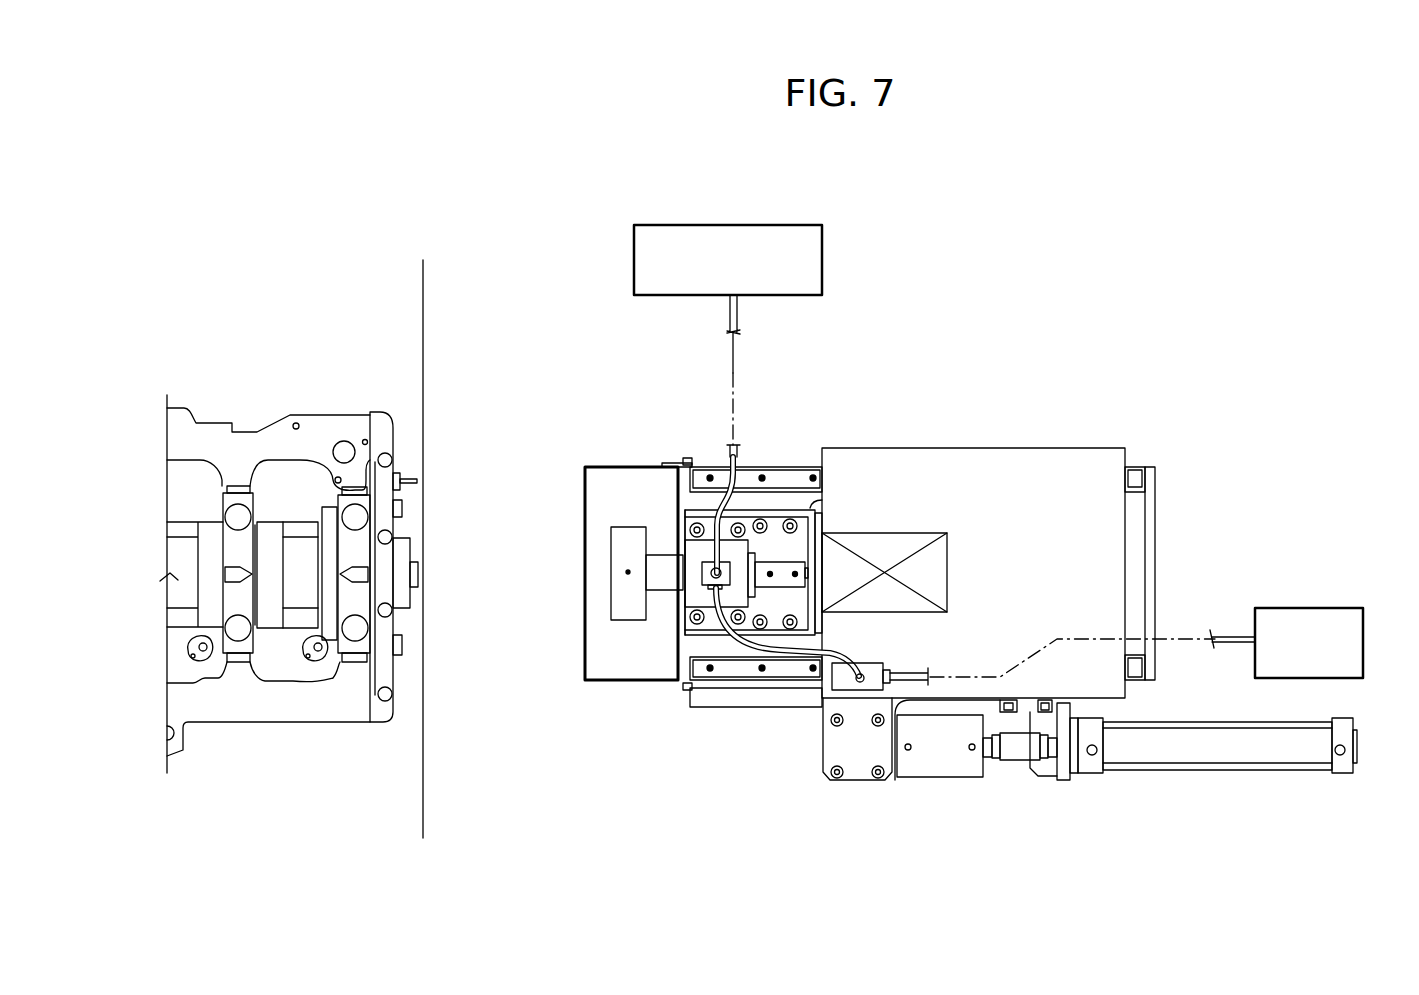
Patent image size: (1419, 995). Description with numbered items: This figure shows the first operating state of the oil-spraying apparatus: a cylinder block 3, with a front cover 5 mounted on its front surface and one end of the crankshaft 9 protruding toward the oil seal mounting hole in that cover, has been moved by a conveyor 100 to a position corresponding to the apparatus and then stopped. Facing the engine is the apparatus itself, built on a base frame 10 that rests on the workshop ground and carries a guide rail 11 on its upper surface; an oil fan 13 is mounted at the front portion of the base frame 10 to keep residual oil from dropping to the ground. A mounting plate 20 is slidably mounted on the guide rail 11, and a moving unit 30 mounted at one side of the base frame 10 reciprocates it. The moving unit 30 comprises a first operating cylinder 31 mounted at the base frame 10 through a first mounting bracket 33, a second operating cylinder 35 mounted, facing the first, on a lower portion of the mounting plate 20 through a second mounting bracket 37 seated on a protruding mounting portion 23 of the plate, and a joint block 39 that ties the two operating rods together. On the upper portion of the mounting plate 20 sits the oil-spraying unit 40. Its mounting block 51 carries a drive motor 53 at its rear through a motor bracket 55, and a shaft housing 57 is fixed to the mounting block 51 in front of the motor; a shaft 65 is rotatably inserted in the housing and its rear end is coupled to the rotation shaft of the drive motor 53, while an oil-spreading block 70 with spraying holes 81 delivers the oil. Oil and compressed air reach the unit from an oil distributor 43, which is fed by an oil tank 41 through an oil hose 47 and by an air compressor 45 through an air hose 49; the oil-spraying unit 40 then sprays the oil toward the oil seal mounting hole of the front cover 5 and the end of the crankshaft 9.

The cylinder block 3 is at (275, 717).
The front cover 5 is at (383, 722).
The crankshaft 9 is at (300, 552).
The base frame 10 is at (772, 698).
The guide rail 11 is at (745, 470).
The oil fan 13 is at (590, 465).
The mounting plate 20 is at (1038, 458).
The mounting portion 23 is at (822, 765).
The moving unit 30 is at (1046, 786).
The first operating cylinder 31 is at (1223, 755).
The first mounting bracket 33 is at (1072, 775).
The second operating cylinder 35 is at (978, 772).
The second mounting bracket 37 is at (895, 780).
The joint block 39 is at (1017, 757).
The oil-spraying unit 40 is at (849, 512).
The oil tank 41 is at (1345, 605).
The oil distributor 43 is at (857, 690).
The air compressor 45 is at (822, 262).
The oil hose 47 is at (733, 647).
The air hose 49 is at (740, 316).
The mounting block 51 is at (775, 515).
The drive motor 53 is at (920, 540).
The motor bracket 55 is at (824, 525).
The shaft housing 57 is at (690, 602).
The shaft 65 is at (665, 560).
The oil-spreading block 70 is at (598, 530).
The spraying holes 81 is at (628, 560).
The conveyor 100 is at (424, 320).